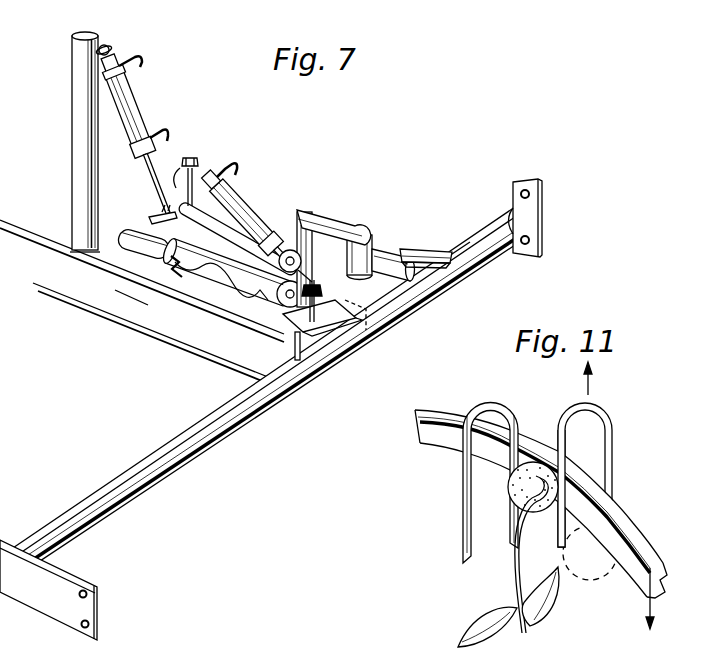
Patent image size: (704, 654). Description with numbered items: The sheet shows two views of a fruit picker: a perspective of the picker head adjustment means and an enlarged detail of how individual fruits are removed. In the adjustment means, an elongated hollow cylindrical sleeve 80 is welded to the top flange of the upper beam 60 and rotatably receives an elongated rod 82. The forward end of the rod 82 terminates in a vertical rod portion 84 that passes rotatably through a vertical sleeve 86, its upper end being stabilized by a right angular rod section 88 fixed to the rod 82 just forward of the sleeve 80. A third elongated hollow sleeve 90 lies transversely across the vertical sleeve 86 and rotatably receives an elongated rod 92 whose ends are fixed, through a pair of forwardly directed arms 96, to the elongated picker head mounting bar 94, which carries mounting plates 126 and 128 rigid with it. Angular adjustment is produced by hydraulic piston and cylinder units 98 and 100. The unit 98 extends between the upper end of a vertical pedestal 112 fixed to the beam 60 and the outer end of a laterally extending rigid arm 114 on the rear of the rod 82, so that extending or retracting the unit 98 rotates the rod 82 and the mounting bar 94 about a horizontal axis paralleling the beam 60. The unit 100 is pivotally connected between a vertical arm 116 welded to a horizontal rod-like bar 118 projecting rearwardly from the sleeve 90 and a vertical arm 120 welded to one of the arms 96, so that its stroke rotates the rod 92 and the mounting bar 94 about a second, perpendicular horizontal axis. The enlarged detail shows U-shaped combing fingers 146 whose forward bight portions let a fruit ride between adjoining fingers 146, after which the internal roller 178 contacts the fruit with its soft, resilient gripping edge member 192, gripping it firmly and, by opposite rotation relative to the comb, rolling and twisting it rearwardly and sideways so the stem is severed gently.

In FIG. 7, the upper beam 60 is at (151, 337).
In FIG. 7, the elongated hollow cylindrical sleeve 80 is at (200, 258).
In FIG. 7, the elongated rod 82 is at (141, 240).
In FIG. 7, the vertical rod portion 84 is at (371, 236).
In FIG. 7, the vertical sleeve 86 is at (397, 307).
In FIG. 7, the right angular rod section 88 is at (310, 213).
In FIG. 7, the third elongated hollow sleeve 90 is at (385, 257).
In FIG. 7, the elongated rod 92 is at (405, 250).
In FIG. 7, the picker head mounting bar 94 is at (483, 257).
In FIG. 7, the forwardly directed arms 96 is at (427, 255).
In FIG. 7, the hydraulic piston and cylinder unit 98 is at (141, 118).
In FIG. 7, the hydraulic piston and cylinder unit 100 is at (254, 210).
In FIG. 7, the vertical pedestal 112 is at (77, 147).
In FIG. 7, the laterally extending rigid arm 114 is at (149, 217).
In FIG. 7, the vertical arm 116 is at (186, 160).
In FIG. 7, the horizontal rod-like bar 118 is at (218, 228).
In FIG. 7, the vertical arm 120 is at (325, 295).
In FIG. 7, the mounting plate 126 is at (543, 204).
In FIG. 7, the mounting plate 128 is at (97, 604).
In FIG. 11, the combing fingers 146 is at (612, 418).
In FIG. 11, the internal roller 178 is at (529, 558).
In FIG. 11, the resilient edge member 192 is at (440, 413).